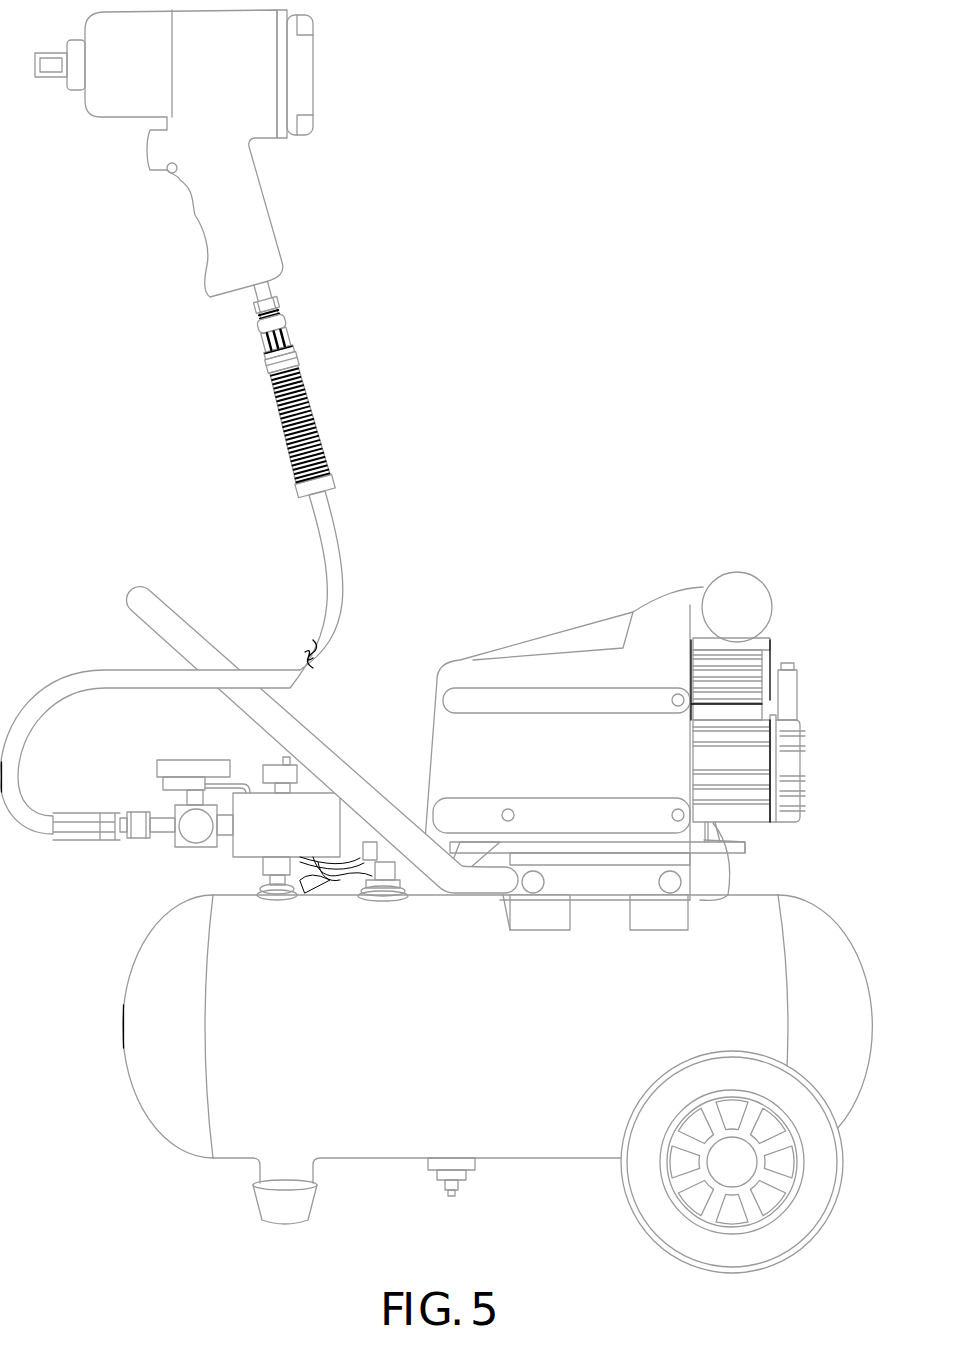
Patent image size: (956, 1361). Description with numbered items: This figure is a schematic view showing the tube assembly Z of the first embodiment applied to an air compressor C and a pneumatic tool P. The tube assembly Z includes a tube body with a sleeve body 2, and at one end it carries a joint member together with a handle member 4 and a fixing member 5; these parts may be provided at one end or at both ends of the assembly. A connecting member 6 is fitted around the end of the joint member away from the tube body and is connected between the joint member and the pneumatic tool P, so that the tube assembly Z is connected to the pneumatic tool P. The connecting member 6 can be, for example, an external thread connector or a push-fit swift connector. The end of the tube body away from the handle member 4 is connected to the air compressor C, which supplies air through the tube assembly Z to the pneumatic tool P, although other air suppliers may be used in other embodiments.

The pneumatic tool P is at (311, 61).
The connecting member 6 is at (257, 297).
The fixing member 5 is at (290, 329).
The tube assembly Z is at (320, 416).
The handle member 4 is at (287, 437).
The sleeve body 2 is at (333, 540).
The air compressor C is at (598, 632).